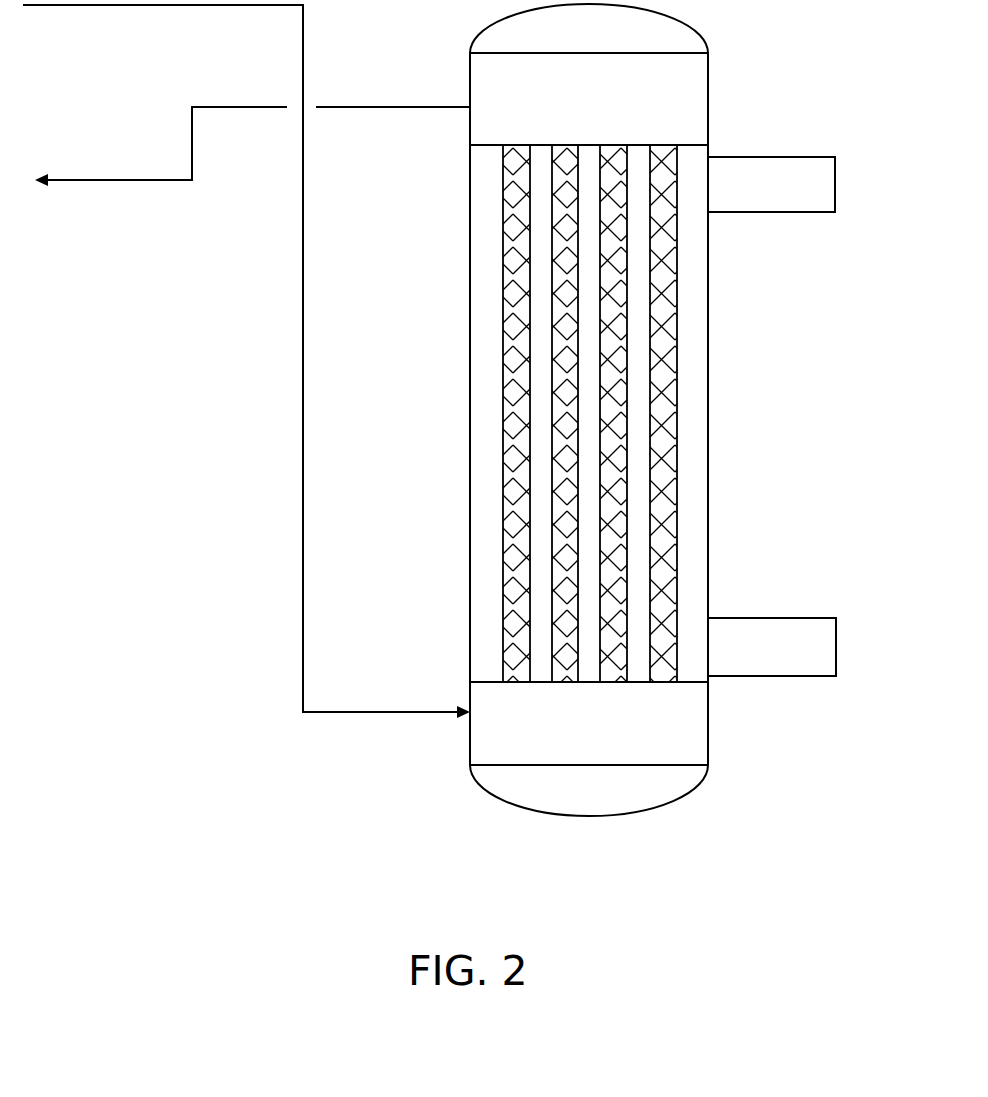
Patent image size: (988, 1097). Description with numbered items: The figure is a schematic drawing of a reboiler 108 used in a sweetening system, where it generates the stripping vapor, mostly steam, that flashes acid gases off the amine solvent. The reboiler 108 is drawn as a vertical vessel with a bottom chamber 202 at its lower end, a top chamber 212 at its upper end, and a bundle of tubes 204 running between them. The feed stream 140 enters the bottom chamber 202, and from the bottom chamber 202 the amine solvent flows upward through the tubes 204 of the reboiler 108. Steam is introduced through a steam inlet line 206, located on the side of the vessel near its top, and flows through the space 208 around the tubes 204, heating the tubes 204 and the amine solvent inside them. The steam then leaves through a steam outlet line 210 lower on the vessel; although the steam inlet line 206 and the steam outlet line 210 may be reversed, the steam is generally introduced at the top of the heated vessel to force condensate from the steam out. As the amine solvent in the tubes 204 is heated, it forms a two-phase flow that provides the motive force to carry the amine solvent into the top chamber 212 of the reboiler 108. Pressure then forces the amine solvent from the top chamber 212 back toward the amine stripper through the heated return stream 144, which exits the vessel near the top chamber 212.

The reboiler 108 is at (694, 410).
The feed stream 140 is at (303, 222).
The heated return stream 144 is at (113, 182).
The bottom chamber 202 is at (708, 745).
The tubes 204 is at (678, 503).
The steam inlet line 206 is at (820, 157).
The space around the tubes 208 is at (695, 282).
The steam outlet line 210 is at (810, 618).
The top chamber 212 is at (708, 88).